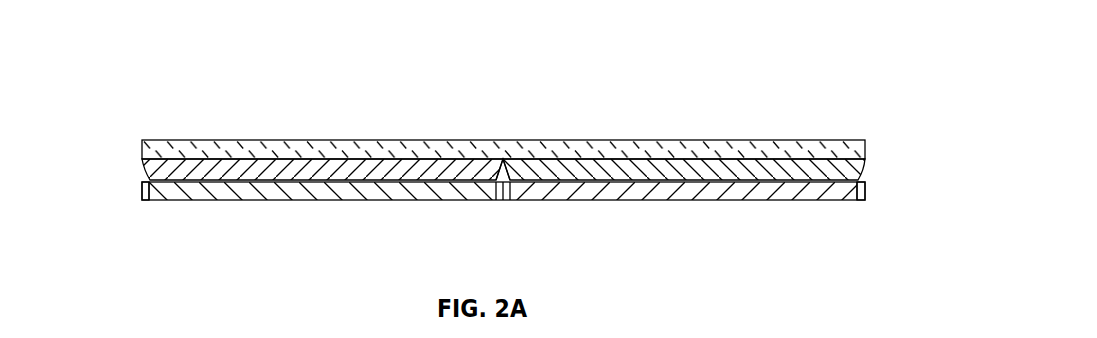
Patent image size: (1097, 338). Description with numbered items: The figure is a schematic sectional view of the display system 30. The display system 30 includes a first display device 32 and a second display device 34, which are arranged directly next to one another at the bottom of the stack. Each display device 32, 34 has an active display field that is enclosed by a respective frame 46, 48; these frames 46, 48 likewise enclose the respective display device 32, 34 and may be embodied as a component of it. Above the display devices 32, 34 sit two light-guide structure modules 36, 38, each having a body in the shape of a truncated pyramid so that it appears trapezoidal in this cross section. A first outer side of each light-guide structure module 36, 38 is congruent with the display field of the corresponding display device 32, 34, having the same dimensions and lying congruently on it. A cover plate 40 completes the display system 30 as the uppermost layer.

The display system 30 is at (684, 120).
The first display device 32 is at (171, 207).
The second display device 34 is at (838, 211).
The light-guide structure module 36 is at (132, 165).
The light-guide structure module 38 is at (877, 167).
The cover plate 40 is at (312, 148).
The frame 46 is at (502, 160).
The frame 48 is at (508, 164).